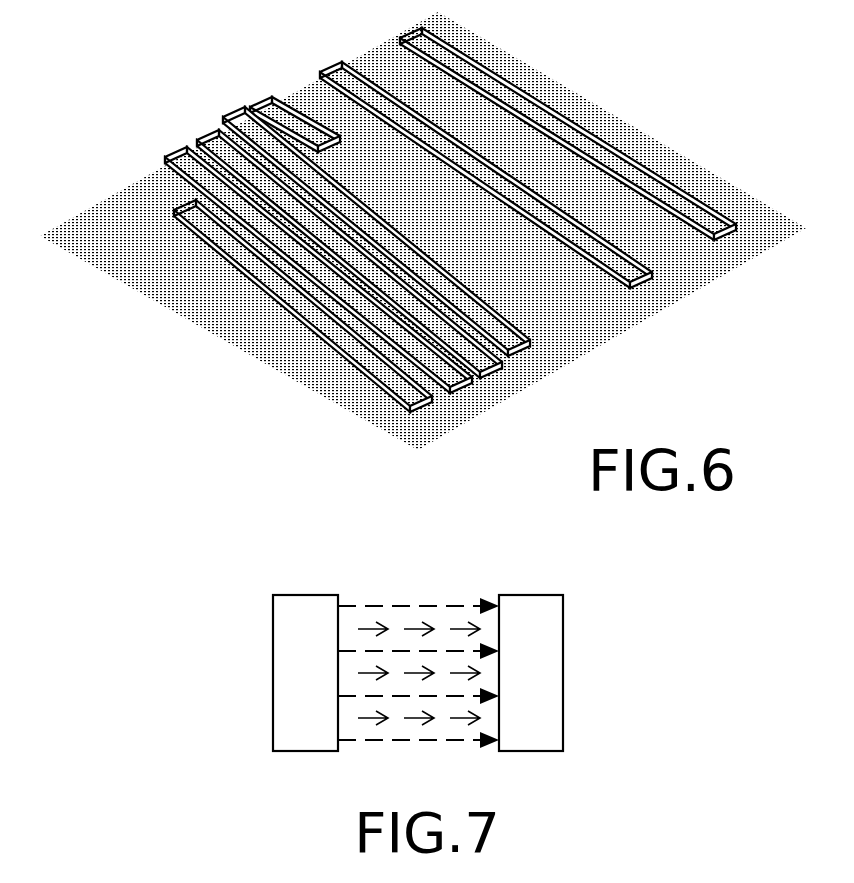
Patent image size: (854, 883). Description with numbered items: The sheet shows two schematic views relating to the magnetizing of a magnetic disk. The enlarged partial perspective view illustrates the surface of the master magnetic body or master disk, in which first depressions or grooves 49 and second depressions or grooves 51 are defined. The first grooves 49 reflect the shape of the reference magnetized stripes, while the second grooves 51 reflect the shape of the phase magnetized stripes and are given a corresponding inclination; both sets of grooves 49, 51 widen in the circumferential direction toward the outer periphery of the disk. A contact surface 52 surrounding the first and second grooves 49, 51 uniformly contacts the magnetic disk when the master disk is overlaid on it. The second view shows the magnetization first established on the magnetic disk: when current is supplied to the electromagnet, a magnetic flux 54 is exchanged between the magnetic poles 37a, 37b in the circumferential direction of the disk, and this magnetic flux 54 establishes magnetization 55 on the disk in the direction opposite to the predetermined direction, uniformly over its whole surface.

In FIG. 6, the first grooves 49 is at (364, 72).
In FIG. 6, the second grooves 51 is at (195, 175).
In FIG. 6, the contact surface 52 is at (608, 125).
In FIG. 7, the magnetic pole 37a is at (273, 720).
In FIG. 7, the magnetic pole 37b is at (563, 722).
In FIG. 7, the magnetic flux 54 is at (387, 605).
In FIG. 7, the magnetization 55 is at (458, 628).